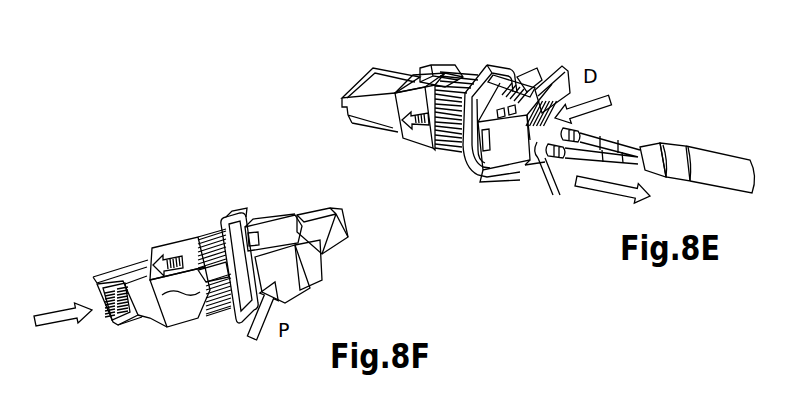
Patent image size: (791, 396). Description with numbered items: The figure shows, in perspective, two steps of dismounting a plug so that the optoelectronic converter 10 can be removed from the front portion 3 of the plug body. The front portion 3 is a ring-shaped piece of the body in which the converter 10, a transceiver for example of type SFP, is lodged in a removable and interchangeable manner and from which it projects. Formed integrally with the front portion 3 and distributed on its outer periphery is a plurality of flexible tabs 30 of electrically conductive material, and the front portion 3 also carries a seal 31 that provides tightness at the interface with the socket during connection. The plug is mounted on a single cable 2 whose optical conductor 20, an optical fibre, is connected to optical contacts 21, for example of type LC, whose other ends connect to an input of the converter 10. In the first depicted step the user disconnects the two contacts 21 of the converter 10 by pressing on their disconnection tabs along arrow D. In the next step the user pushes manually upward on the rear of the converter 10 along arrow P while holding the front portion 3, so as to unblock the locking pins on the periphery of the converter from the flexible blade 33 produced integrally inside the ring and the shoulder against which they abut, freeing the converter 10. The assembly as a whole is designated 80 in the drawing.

In FIG. 8E, the cable 2 is at (678, 152).
In FIG. 8E, the front portion 3 is at (398, 138).
In FIG. 8F, the front portion 3 is at (180, 312).
In FIG. 8E, the optoelectronic converter 10 is at (372, 85).
In FIG. 8F, the optoelectronic converter 10 is at (113, 268).
In FIG. 8E, the optical conductor 20 is at (614, 160).
In FIG. 8E, the optical contacts 21 is at (548, 200).
In FIG. 8E, the flexible tabs 30 is at (464, 68).
In FIG. 8F, the flexible tabs 30 is at (203, 322).
In FIG. 8E, the seal 31 is at (461, 178).
In FIG. 8F, the seal 31 is at (232, 222).
In FIG. 8E, the flexible blade 33 is at (540, 77).
In FIG. 8F, the flexible blade 33 is at (347, 230).
In FIG. 8E, the connector assembly 80 is at (340, 4).